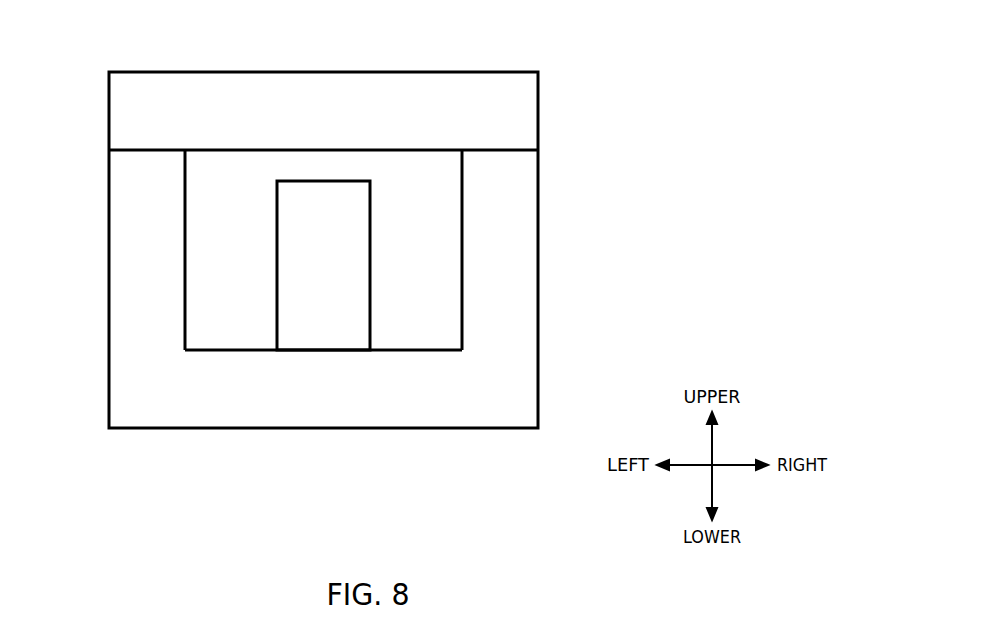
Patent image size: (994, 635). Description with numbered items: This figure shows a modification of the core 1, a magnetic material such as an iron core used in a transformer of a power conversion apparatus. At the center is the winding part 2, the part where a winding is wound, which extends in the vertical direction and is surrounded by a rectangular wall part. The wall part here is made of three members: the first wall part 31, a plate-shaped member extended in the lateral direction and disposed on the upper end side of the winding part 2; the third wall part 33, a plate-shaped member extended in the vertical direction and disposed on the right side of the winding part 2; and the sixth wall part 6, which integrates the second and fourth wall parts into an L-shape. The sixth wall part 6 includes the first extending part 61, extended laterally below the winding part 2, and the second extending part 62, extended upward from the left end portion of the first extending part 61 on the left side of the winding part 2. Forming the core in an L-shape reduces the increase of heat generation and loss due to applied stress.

The core 1 is at (657, 34).
The winding part 2 is at (318, 317).
The sixth wall part 6 is at (106, 397).
The first wall part 31 is at (283, 95).
The third wall part 33 is at (507, 235).
The first extending part 61 is at (242, 410).
The second extending part 62 is at (127, 278).